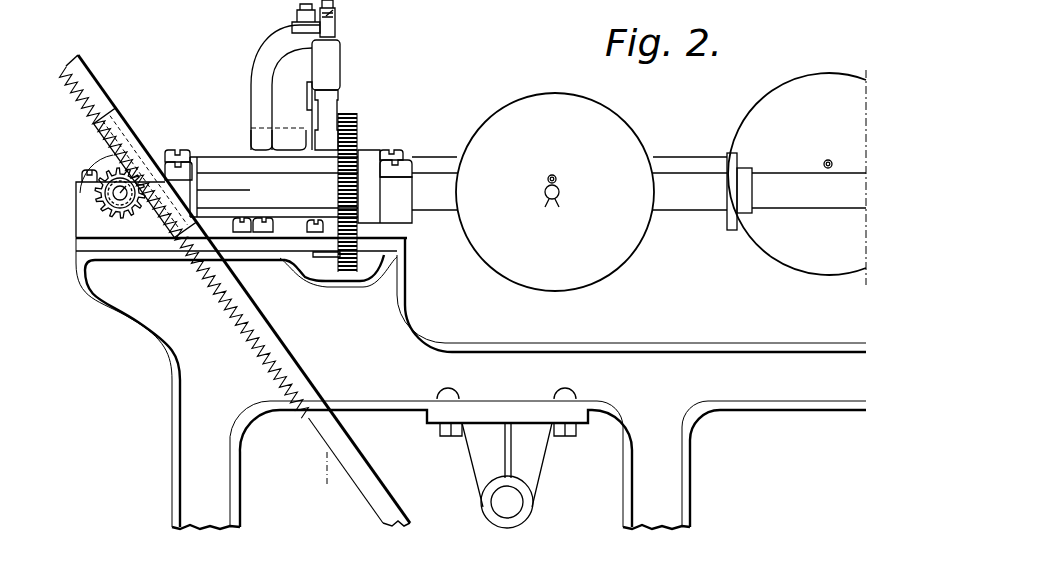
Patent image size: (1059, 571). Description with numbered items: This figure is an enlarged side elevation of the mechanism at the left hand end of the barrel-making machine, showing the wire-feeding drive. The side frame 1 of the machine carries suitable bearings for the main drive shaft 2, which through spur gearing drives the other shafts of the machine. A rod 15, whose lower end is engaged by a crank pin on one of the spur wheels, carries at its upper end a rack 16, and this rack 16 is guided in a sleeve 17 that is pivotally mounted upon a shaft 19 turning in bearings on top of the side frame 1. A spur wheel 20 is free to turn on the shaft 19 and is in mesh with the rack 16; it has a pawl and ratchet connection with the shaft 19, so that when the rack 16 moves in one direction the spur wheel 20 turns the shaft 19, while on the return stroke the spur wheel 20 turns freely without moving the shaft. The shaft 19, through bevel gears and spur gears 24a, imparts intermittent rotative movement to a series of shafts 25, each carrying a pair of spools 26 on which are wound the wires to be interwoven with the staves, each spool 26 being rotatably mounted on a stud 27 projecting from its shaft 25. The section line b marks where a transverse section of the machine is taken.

The side frame 1 is at (471, 383).
The main drive shaft 2 is at (508, 475).
The rod 15 is at (377, 504).
The rack 16 is at (184, 243).
The sleeve 17 is at (138, 141).
The shaft 19 is at (107, 209).
The spur wheel 20 is at (120, 197).
The spur gears 24a is at (359, 135).
The shaft 25 is at (759, 191).
The spool 26 is at (661, 180).
The stud 27 is at (822, 168).
The section line b— b is at (333, 253).